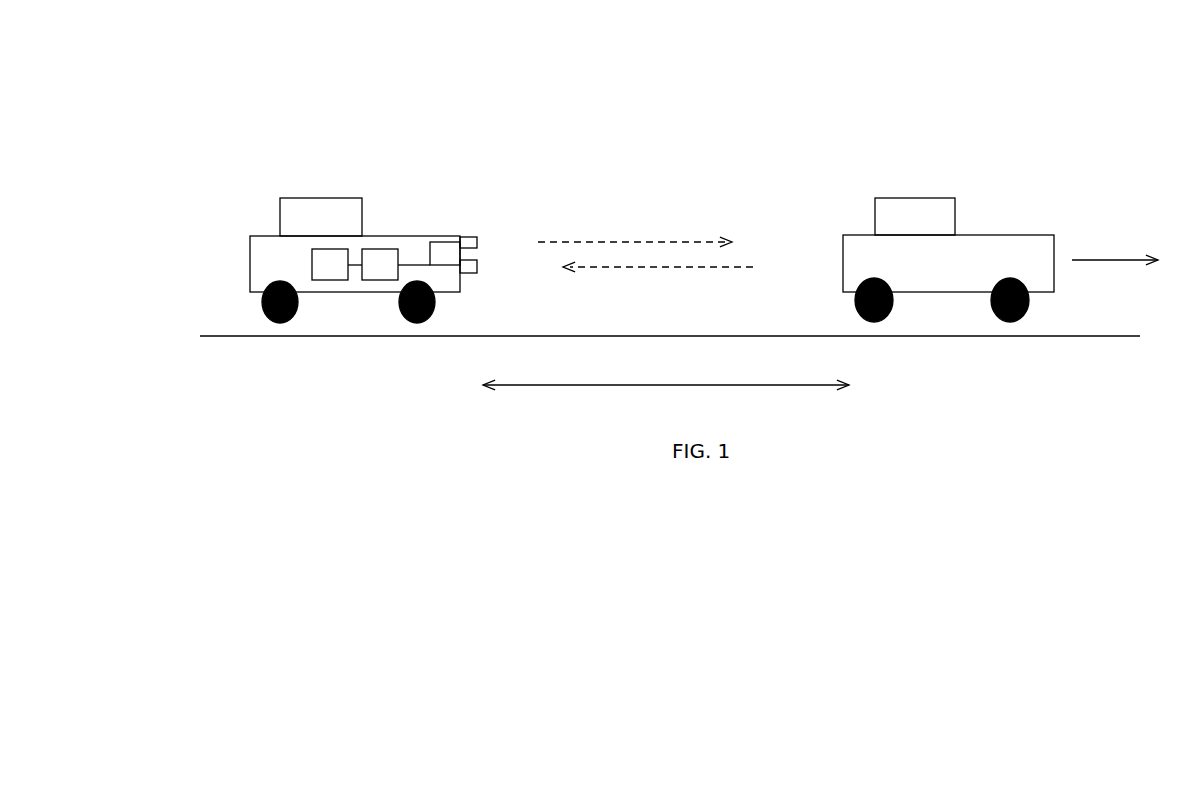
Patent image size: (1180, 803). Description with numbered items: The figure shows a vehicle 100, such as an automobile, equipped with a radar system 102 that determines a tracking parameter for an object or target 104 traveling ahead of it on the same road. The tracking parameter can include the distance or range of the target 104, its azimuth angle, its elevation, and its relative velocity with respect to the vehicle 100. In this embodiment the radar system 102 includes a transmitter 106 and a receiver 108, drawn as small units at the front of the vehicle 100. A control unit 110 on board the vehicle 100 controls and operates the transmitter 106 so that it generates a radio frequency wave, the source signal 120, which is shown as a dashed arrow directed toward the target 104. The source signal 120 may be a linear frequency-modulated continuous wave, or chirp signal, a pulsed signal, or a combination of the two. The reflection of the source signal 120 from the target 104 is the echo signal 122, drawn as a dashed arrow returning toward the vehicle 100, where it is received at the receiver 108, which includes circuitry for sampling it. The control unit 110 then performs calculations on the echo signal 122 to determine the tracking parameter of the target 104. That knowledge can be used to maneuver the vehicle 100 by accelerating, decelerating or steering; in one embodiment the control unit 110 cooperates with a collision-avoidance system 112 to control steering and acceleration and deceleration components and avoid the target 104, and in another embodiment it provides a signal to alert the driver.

The vehicle 100 is at (298, 162).
The radar system 102 is at (472, 183).
The target 104 is at (992, 172).
The transmitter 106 is at (473, 237).
The receiver 108 is at (475, 270).
The control unit 110 is at (393, 240).
The collision-avoidance system 112 is at (330, 280).
The source signal 120 is at (629, 242).
The echo signal 122 is at (673, 267).